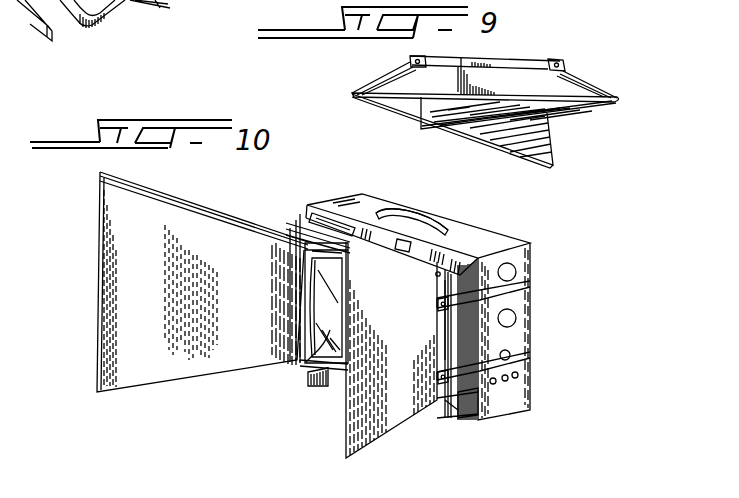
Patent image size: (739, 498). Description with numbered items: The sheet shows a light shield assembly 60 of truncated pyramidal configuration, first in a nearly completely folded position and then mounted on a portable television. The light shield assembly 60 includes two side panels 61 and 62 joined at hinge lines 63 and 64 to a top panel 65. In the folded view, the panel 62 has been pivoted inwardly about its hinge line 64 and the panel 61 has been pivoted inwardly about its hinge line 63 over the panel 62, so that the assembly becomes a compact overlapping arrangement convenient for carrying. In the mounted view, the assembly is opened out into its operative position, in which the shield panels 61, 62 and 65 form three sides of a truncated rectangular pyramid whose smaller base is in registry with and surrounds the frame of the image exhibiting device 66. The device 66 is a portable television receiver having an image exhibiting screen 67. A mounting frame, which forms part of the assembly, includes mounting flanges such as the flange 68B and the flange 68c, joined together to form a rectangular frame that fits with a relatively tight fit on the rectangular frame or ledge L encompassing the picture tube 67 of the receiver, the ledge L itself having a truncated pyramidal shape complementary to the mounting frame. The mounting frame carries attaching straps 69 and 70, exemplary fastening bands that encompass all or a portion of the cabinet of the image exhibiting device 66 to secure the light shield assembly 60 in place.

In FIG. 9, the light shield assembly 60 is at (484, 113).
In FIG. 9, the side panel 61 is at (513, 146).
In FIG. 10, the side panel 61 is at (388, 416).
In FIG. 9, the side panel 62 is at (565, 111).
In FIG. 10, the side panel 62 is at (143, 366).
In FIG. 9, the hinge line 63 is at (360, 95).
In FIG. 9, the hinge line 64 is at (590, 91).
In FIG. 9, the top panel 65 is at (402, 84).
In FIG. 10, the top panel 65 is at (217, 213).
In FIG. 10, the image exhibiting device 66 is at (505, 223).
In FIG. 10, the image exhibiting screen 67 is at (325, 333).
In FIG. 10, the mounting flange 68B is at (443, 330).
In FIG. 10, the mounting flange 68c is at (423, 270).
In FIG. 10, the attaching strap 69 is at (530, 287).
In FIG. 10, the attaching strap 70 is at (530, 354).
In FIG. 10, the ledge L is at (452, 420).